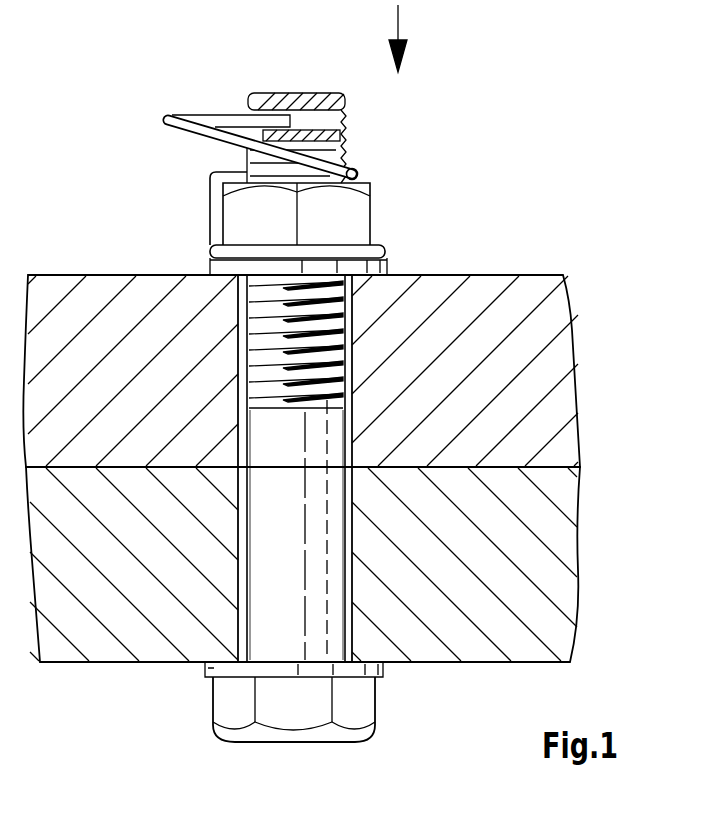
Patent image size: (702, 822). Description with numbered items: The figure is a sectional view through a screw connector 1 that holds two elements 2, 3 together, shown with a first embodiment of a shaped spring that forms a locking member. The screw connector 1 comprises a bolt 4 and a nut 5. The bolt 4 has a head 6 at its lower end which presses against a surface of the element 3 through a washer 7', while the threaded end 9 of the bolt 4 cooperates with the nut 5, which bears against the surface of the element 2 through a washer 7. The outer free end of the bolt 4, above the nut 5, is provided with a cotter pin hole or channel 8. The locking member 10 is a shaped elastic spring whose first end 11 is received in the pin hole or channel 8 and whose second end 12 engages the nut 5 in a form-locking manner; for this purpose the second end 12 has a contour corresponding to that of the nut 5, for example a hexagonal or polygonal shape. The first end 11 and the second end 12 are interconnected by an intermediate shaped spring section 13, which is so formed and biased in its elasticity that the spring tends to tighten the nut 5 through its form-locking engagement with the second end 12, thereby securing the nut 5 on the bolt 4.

The screw connector 1 is at (478, 118).
The element 2 is at (566, 304).
The element 3 is at (580, 578).
The bolt 4 is at (262, 605).
The nut 5 is at (242, 207).
The head 6 is at (358, 718).
The washer 7 is at (261, 243).
The washer 7' is at (267, 697).
The cotter pin hole or channel 8 is at (343, 115).
The threaded end 9 is at (340, 312).
The locking member 10 is at (259, 131).
The first end 11 is at (258, 95).
The second end 12 is at (385, 250).
The intermediate shaped spring section 13 is at (356, 168).